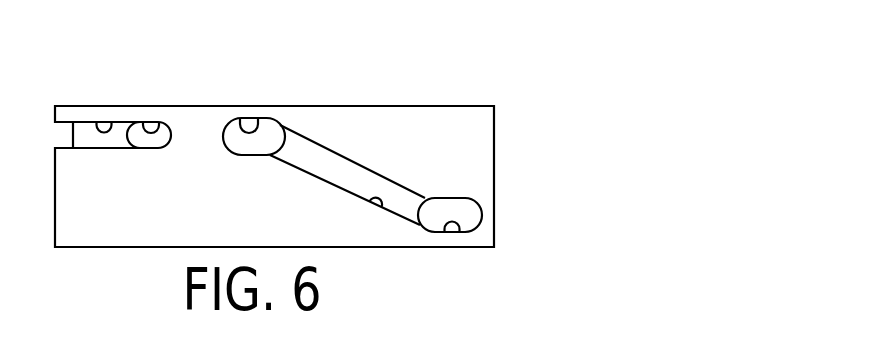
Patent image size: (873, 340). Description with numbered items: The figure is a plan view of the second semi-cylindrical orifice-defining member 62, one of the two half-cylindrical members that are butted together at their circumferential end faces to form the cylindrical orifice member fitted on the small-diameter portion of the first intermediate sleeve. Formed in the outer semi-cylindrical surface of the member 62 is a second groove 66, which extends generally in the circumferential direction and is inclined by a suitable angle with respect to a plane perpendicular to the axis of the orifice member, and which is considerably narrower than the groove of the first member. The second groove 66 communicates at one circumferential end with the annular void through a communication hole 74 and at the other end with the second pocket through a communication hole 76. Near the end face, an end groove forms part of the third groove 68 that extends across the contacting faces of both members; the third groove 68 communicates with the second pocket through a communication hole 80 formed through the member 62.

The second semi-cylindrical orifice-defining member 62 is at (474, 80).
The third groove 68 is at (109, 129).
The communication hole 80 is at (158, 129).
The communication hole 76 is at (247, 132).
The communication hole 74 is at (458, 230).
The second groove 66 is at (376, 207).